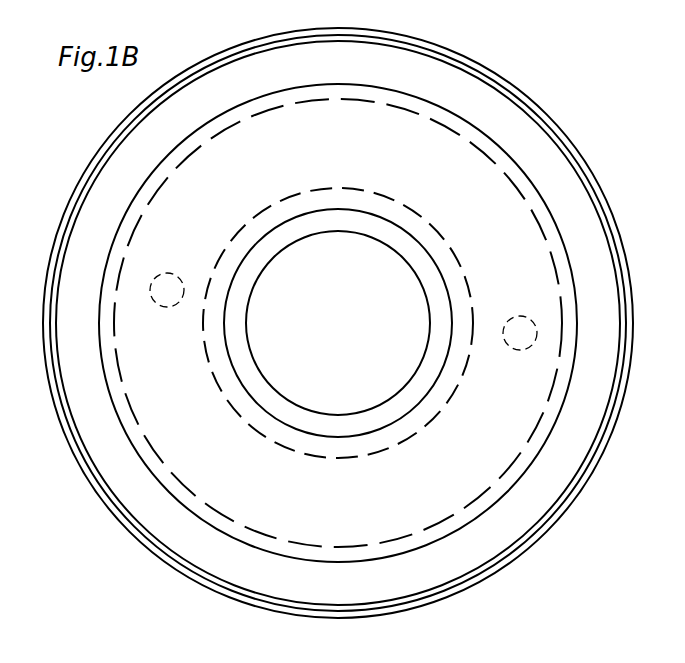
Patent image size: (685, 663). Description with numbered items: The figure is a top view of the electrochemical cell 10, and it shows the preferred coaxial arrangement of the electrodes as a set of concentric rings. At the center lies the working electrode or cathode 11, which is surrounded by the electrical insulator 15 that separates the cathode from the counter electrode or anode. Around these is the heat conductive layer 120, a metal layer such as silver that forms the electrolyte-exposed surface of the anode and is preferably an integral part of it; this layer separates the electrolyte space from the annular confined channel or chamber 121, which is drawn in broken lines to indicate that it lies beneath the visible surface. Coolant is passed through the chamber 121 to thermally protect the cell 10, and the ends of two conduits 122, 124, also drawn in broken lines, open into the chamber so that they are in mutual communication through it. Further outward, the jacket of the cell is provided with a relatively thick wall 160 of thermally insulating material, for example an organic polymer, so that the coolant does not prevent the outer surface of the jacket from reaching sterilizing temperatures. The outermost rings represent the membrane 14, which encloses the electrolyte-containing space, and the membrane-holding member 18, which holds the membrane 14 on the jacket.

The cell 10 is at (582, 122).
The working electrode or cathode 11 is at (342, 341).
The membrane 14 is at (517, 100).
The electrical insulator 15 is at (367, 227).
The membrane-holding member 18 is at (60, 228).
The heat conductive layer 120 is at (325, 193).
The annular confined channel or chamber 121 is at (510, 207).
The conduit 122 is at (524, 349).
The conduit 124 is at (167, 306).
The wall 160 is at (606, 343).